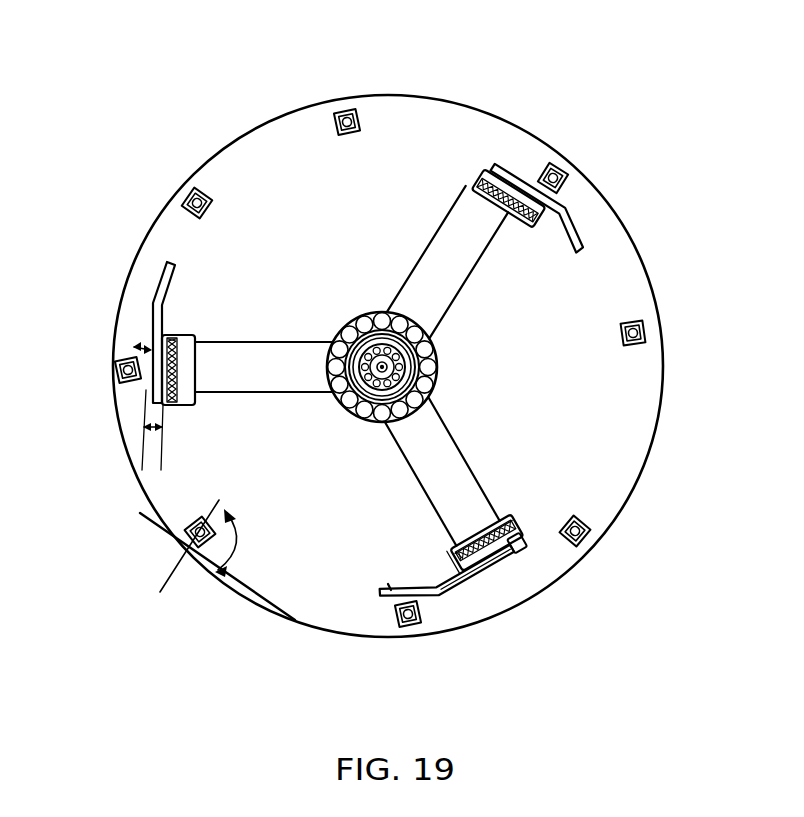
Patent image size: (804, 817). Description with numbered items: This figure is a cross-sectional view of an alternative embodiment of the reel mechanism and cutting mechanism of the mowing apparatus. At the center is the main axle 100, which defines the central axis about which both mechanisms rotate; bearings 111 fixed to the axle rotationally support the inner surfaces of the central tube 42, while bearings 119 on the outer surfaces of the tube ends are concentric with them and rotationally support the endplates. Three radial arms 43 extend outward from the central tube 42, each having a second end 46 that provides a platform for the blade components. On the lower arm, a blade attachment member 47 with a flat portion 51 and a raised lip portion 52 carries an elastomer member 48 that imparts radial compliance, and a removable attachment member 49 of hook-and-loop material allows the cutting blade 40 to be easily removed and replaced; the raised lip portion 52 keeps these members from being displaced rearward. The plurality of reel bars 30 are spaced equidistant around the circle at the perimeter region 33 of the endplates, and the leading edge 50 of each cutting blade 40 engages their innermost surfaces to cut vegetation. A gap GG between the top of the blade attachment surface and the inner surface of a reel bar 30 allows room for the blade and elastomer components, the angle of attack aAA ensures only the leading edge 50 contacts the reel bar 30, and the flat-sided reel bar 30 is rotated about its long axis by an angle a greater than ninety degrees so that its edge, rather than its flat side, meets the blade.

The reel bars 30 is at (346, 108).
The perimeter region 33 is at (579, 387).
The cutting blades 40 is at (503, 567).
The central tube 42 is at (443, 370).
The radial arms 43 is at (413, 270).
The second end 46 is at (448, 257).
The blade attachment member 47 is at (503, 517).
The elastomer member 48 is at (510, 530).
The removable attachment member 49 is at (473, 563).
The leading edge 50 is at (392, 590).
The flat portion 51 is at (513, 523).
The raised lip portion 52 is at (512, 530).
The main axle 100 is at (345, 335).
The bearings 111 is at (340, 345).
The bearings 119 is at (360, 314).
The angle of attack aAA is at (134, 345).
The gap GG is at (142, 441).
The angle a is at (233, 567).